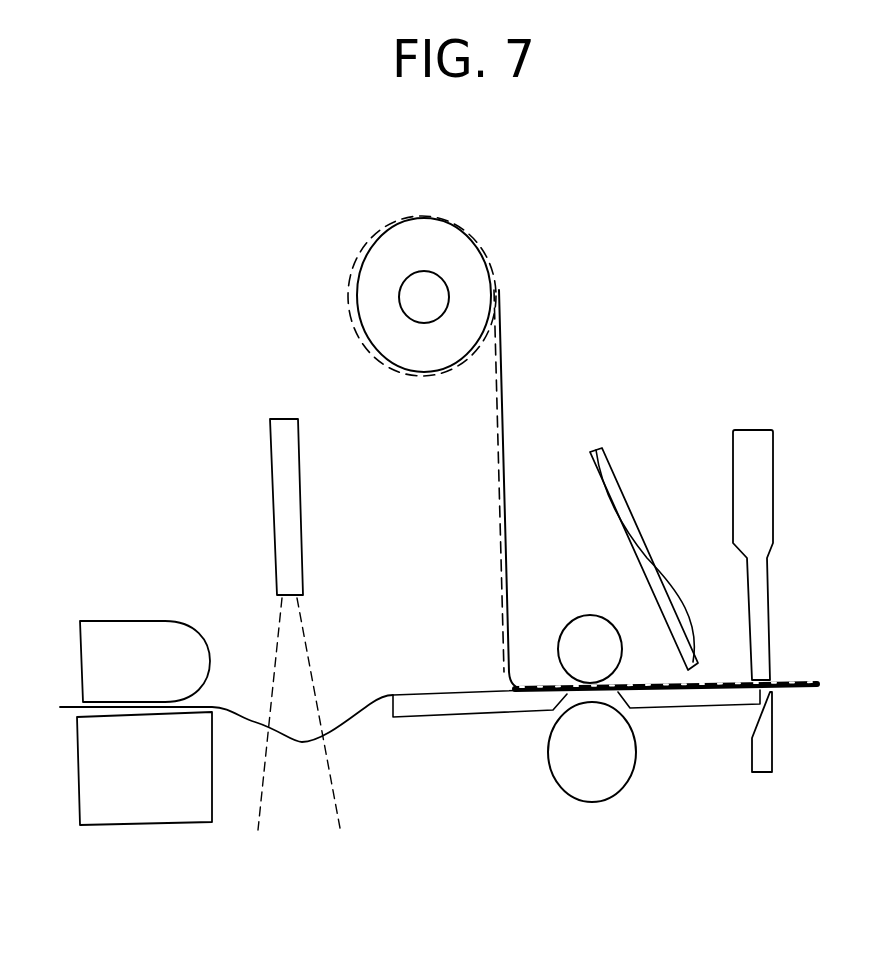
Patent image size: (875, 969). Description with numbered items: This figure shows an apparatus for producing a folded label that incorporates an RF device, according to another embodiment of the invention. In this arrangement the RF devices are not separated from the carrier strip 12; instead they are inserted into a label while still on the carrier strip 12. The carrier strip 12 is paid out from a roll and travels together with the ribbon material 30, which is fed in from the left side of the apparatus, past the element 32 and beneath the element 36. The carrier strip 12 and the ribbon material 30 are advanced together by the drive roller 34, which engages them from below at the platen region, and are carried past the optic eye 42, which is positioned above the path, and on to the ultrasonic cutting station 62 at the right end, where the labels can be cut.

The carrier strip 12 is at (427, 218).
The ribbon material 30 is at (401, 695).
The feed rollers 32 is at (110, 618).
The drive roller 34 is at (602, 793).
The sensor 36 is at (272, 466).
The optic eye 42 is at (596, 448).
The ultrasonic cutting station 62 is at (765, 497).